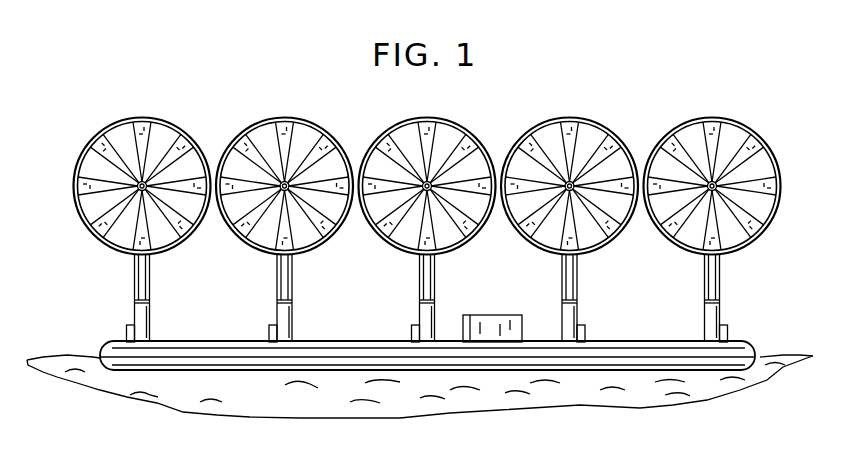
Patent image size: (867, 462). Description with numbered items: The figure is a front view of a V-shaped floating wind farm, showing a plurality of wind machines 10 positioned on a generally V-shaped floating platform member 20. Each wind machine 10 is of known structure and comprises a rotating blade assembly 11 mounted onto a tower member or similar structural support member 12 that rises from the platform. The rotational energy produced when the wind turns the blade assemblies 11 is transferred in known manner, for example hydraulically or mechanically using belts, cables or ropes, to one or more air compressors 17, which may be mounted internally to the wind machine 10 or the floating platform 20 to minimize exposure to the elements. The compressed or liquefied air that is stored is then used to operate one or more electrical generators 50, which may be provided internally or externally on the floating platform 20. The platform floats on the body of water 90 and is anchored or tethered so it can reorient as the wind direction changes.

The wind machine 10 is at (498, 125).
The rotating blade assembly 11 is at (82, 227).
The tower member 12 is at (134, 305).
The air compressor 17 is at (270, 337).
The floating platform member 20 is at (762, 325).
The electrical generator 50 is at (478, 315).
The water body 90 is at (785, 355).